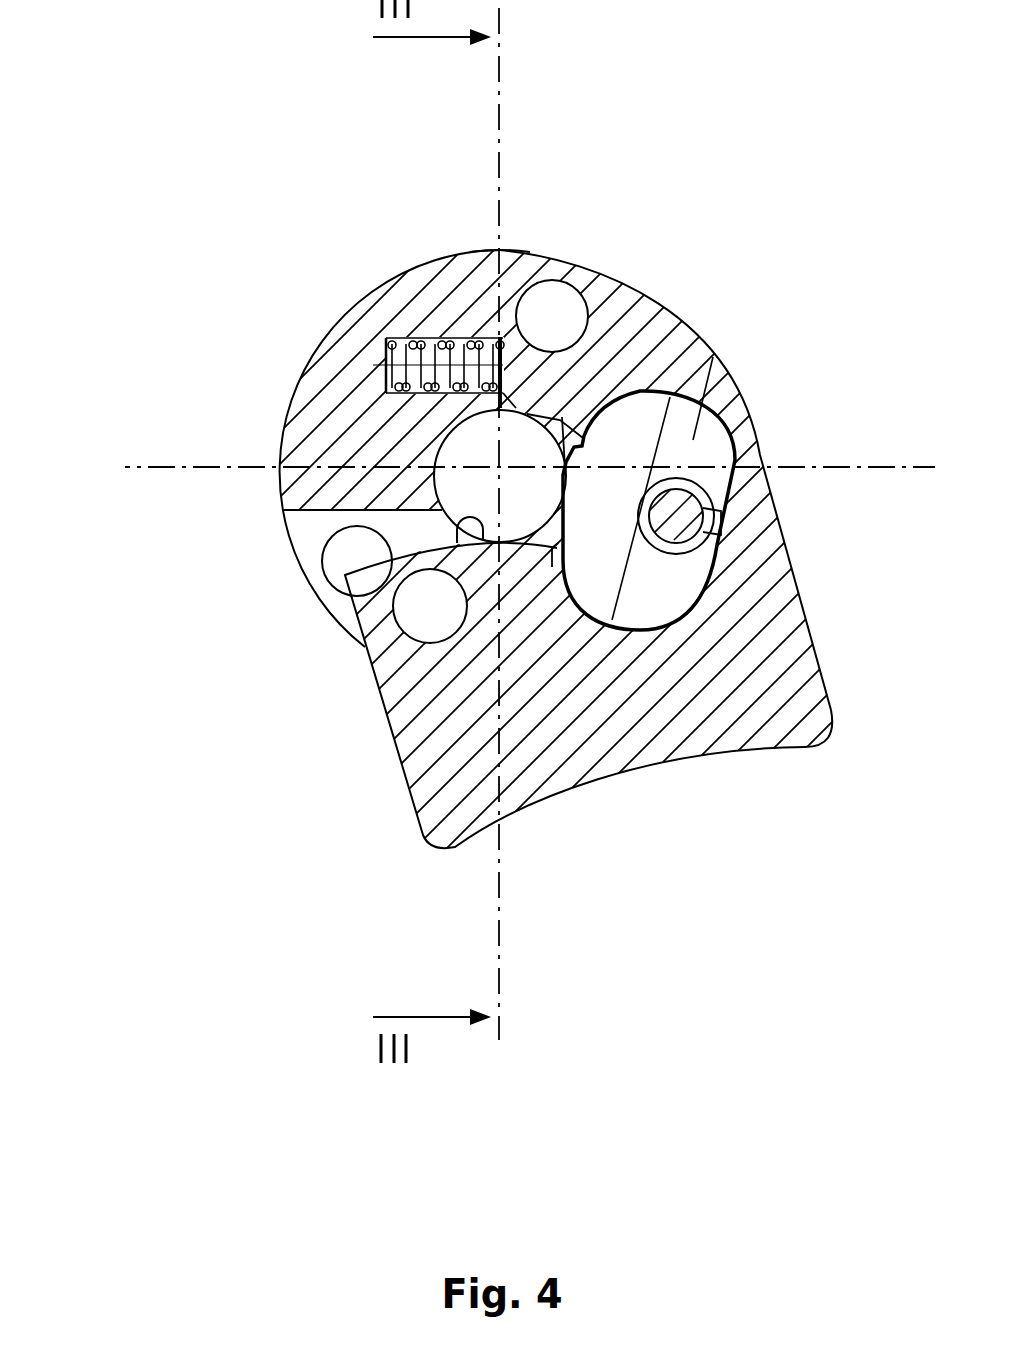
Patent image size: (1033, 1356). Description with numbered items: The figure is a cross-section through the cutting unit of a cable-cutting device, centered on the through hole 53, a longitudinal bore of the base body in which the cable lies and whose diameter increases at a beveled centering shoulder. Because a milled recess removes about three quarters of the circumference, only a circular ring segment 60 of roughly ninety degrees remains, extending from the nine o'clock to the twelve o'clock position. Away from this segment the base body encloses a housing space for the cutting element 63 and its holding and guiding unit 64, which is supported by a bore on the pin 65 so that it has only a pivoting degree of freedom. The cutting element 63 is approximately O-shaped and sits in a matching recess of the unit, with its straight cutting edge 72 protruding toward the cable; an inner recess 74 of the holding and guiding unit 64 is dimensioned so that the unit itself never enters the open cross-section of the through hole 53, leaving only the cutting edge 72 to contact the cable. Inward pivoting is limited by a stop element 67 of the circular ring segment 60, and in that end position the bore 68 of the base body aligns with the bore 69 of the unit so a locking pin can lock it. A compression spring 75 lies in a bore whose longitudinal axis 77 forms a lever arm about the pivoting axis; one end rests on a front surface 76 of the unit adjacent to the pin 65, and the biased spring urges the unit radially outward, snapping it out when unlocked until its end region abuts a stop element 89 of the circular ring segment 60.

The through hole 53 is at (467, 698).
The circular ring segment 60 is at (330, 368).
The cutting element 63 is at (740, 373).
The holding and guiding unit 64 is at (767, 680).
The pin 65 is at (547, 310).
The stop element 67 is at (300, 518).
The bore of the base body 68 is at (336, 538).
The bore of the holding and guiding unit 69 is at (441, 578).
The cutting edge 72 is at (600, 397).
The inner recess 74 is at (553, 540).
The compression spring 75 is at (407, 340).
The front surface 76 is at (472, 340).
The longitudinal axis 77 is at (382, 362).
The stop element 89 is at (498, 268).